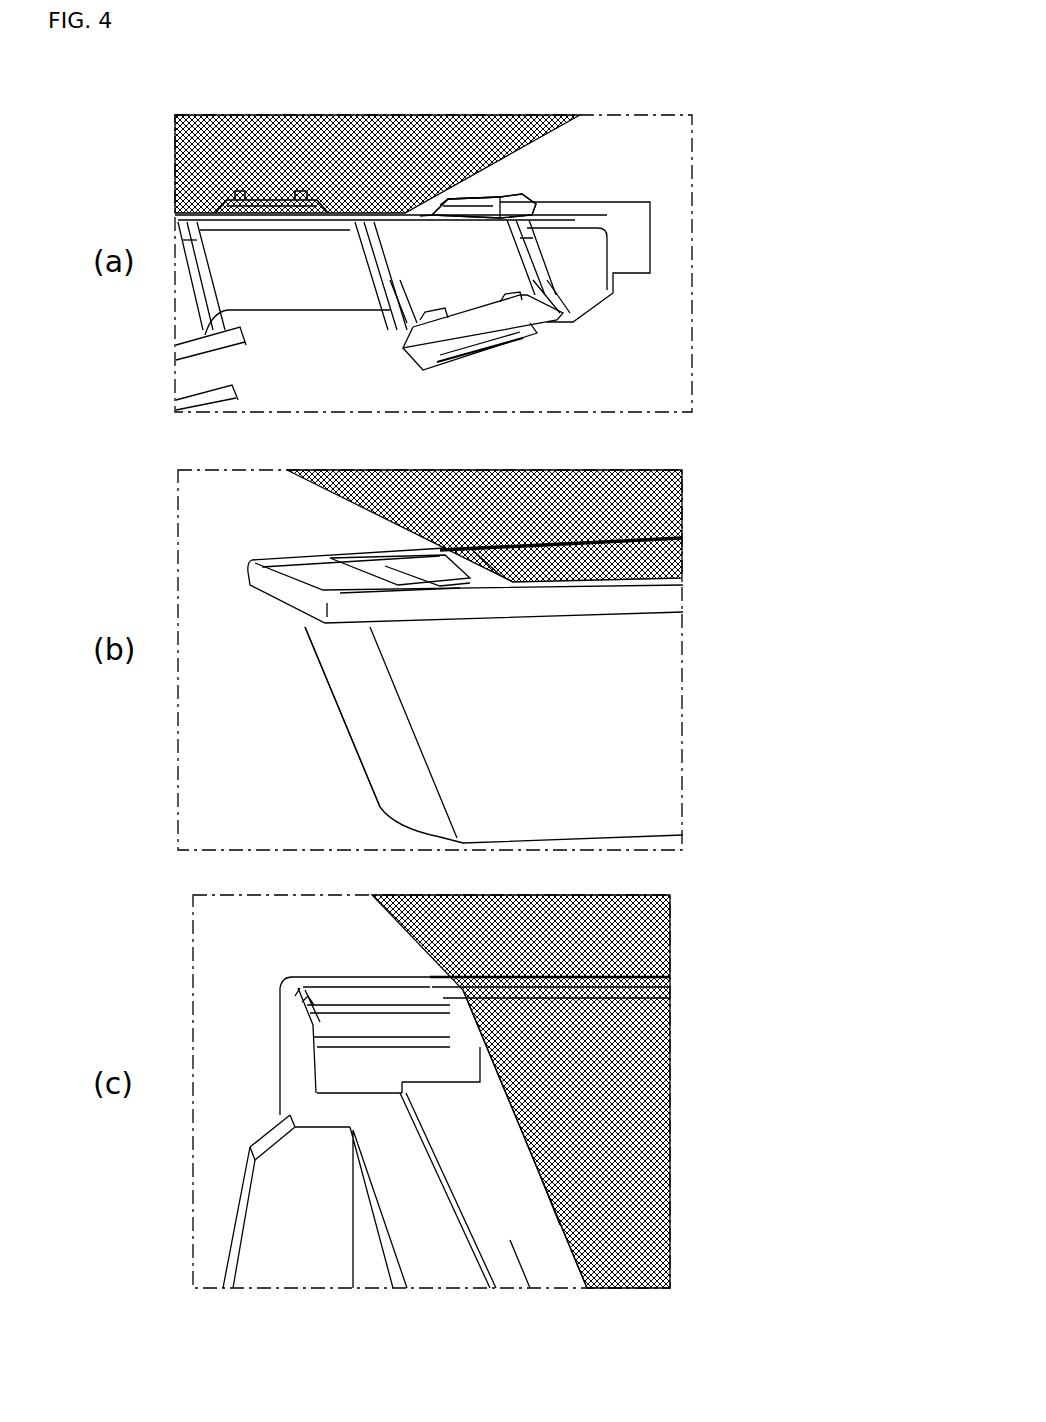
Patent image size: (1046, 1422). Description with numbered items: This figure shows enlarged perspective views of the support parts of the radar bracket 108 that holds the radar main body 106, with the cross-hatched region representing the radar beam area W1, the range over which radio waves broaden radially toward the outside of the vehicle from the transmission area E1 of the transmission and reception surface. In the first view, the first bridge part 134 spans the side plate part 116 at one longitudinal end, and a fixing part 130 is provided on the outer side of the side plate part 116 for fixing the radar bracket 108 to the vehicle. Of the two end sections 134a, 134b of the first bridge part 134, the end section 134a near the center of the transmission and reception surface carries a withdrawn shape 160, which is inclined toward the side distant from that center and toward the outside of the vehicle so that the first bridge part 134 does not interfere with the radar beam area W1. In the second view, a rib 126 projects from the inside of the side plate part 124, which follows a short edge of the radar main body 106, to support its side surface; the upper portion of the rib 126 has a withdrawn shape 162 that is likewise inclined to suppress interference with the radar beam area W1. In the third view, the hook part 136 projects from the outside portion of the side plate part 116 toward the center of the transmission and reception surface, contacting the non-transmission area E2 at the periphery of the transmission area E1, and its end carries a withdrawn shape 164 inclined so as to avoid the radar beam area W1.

The radar beam area W1 is at (313, 115).
The radar main body 106 is at (445, 550).
The radar bracket 108 is at (632, 202).
The side plate part 116 is at (321, 285).
The side plate part 124 is at (360, 733).
The rib 126 is at (432, 600).
The fixing part 130 is at (412, 370).
The first bridge part 134 is at (476, 220).
The end section 134a is at (428, 218).
The end section 134b is at (530, 199).
The hook part 136 is at (447, 1068).
The withdrawn shape 160 is at (478, 196).
The withdrawn shape 162 is at (505, 580).
The withdrawn shape 164 is at (487, 1093).
The transmission area E1 is at (555, 1213).
The non-transmission area E2 is at (525, 1265).